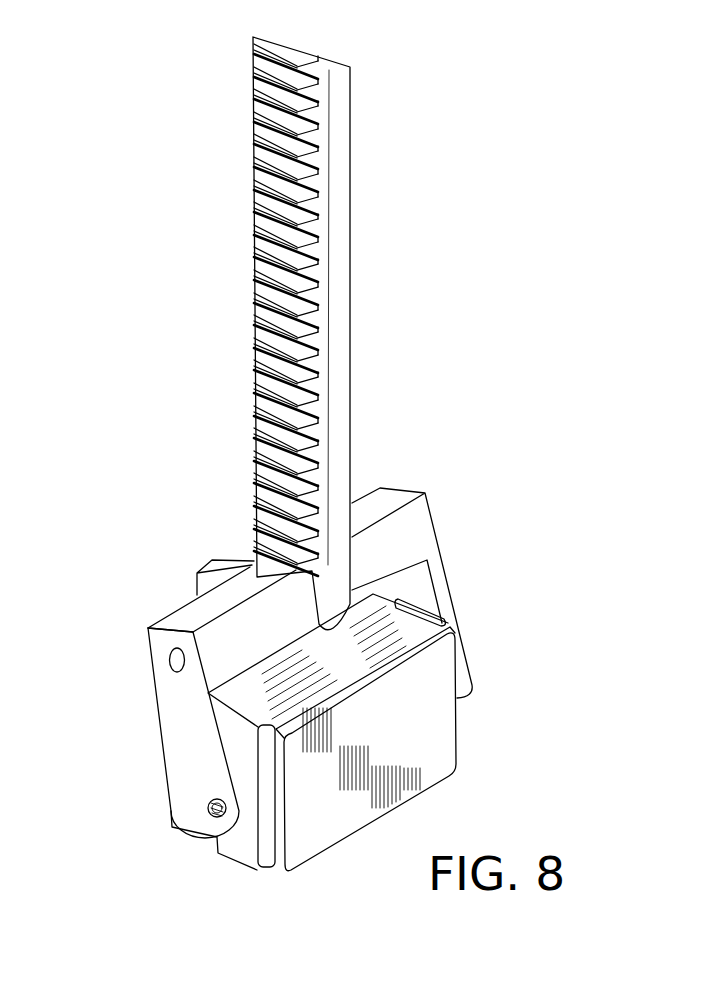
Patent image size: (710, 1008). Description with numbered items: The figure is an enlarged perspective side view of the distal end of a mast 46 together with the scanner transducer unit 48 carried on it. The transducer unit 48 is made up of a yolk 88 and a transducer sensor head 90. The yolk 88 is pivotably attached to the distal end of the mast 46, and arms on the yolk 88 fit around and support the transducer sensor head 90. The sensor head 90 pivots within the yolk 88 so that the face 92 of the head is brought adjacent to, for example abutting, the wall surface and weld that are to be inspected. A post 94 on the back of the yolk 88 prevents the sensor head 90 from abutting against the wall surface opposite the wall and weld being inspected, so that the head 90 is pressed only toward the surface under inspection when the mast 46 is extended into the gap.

The mast 46 is at (338, 161).
The scanner transducer unit 48 is at (468, 531).
The yolk 88 is at (253, 610).
The transducer sensor head 90 is at (200, 832).
The face 92 is at (395, 761).
The post 94 is at (196, 575).